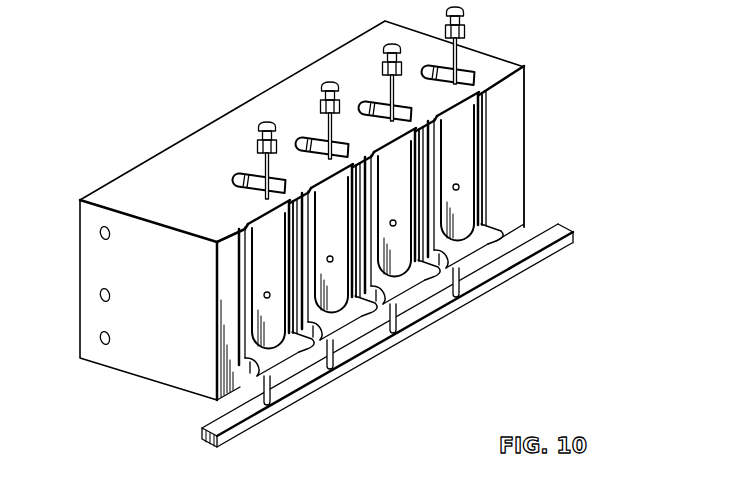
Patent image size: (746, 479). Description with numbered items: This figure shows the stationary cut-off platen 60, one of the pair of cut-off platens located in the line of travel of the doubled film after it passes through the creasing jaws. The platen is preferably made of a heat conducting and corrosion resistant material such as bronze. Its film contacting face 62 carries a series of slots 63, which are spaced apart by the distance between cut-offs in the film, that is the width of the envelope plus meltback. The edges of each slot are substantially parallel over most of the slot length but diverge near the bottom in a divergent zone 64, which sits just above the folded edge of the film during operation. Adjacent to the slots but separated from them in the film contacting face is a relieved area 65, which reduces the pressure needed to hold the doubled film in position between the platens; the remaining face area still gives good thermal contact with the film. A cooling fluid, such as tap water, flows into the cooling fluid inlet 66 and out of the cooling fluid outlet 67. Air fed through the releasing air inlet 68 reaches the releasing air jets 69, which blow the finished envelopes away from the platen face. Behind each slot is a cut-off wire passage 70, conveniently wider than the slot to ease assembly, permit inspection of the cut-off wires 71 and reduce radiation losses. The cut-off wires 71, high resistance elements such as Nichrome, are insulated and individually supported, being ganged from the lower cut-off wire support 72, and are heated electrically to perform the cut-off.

The stationary cut-off platen 60 is at (528, 82).
The film contacting face 62 is at (516, 135).
The slots 63 is at (297, 192).
The divergent zone 64 is at (301, 343).
The relieved area 65 is at (363, 227).
The cooling fluid inlet 66 is at (102, 345).
The cooling fluid outlet 67 is at (100, 233).
The releasing air inlet 68 is at (100, 295).
The releasing air jets 69 is at (280, 302).
The cut-off wire passage 70 is at (236, 175).
The cut-off wires 71 is at (270, 176).
The lower cut-off wire support 72 is at (550, 258).